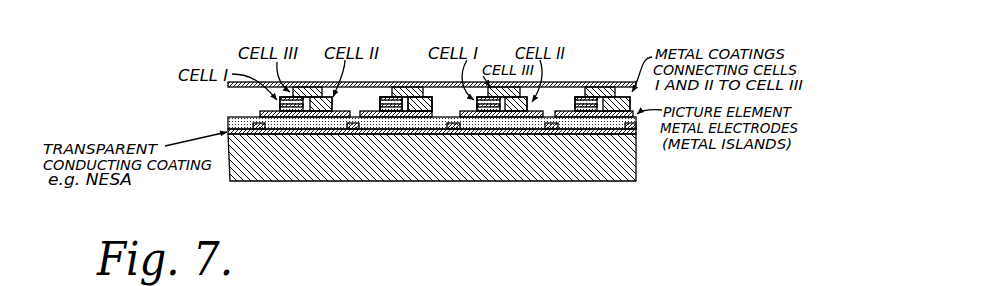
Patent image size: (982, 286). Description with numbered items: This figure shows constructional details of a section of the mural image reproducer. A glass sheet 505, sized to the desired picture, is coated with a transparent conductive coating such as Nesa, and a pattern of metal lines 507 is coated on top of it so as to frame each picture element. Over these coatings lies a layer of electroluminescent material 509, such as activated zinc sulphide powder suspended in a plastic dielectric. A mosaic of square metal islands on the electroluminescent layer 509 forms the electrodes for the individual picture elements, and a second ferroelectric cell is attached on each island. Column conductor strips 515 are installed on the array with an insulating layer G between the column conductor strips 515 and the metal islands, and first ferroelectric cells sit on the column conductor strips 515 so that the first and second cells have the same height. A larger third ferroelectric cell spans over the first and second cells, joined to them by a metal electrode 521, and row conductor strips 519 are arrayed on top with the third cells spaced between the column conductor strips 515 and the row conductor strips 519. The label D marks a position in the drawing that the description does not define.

The glass sheet 505 is at (545, 182).
The metal lines 507 is at (352, 133).
The electroluminescent layer 509 is at (638, 121).
The column conductor strips 515 is at (278, 106).
The row conductor strips 519 is at (578, 80).
The metal electrode 521 is at (459, 78).
The insulating layer G is at (379, 103).
The drain electrode D is at (431, 102).